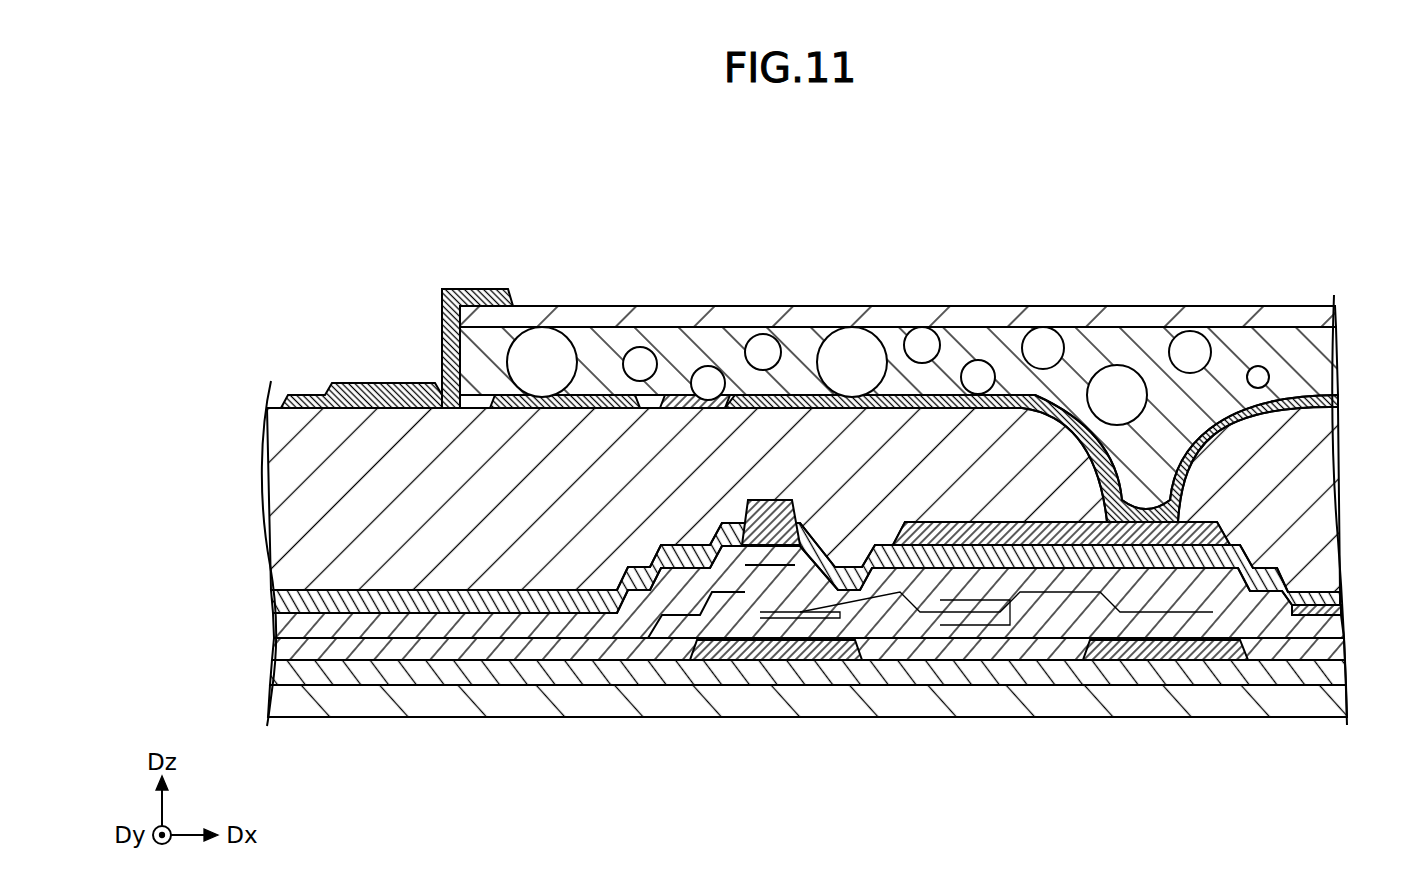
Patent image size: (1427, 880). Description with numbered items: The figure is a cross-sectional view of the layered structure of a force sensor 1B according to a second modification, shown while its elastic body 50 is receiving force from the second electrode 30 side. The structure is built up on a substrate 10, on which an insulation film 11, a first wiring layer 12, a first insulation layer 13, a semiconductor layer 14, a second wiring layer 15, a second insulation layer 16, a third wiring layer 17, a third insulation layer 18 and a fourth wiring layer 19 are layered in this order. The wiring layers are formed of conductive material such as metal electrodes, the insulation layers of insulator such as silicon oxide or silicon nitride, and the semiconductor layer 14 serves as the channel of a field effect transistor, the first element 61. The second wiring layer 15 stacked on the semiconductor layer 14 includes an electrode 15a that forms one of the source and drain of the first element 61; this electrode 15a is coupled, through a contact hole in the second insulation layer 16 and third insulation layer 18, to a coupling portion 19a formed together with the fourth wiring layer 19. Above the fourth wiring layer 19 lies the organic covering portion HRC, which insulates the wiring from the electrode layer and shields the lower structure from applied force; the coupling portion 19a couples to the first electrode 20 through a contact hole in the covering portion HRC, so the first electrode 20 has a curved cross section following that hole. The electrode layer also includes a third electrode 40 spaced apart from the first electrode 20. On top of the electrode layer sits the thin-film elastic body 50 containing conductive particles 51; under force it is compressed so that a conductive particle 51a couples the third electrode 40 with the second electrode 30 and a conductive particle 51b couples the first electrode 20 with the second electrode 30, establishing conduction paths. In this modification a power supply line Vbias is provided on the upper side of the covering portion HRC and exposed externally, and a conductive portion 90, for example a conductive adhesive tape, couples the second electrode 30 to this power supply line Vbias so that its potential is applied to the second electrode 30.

The force sensor 1B is at (1110, 157).
The substrate 10 is at (275, 703).
The insulation film 11 is at (275, 677).
The first wiring layer 12 is at (1213, 652).
The first insulation layer 13 is at (275, 650).
The semiconductor layer 14 is at (795, 615).
The second wiring layer 15 is at (1213, 605).
The electrode 15a is at (975, 615).
The second insulation layer 16 is at (275, 625).
The third wiring layer 17 is at (750, 565).
The third insulation layer 18 is at (275, 600).
The fourth wiring layer 19 is at (757, 497).
The coupling portion 19a is at (1220, 530).
The first electrode 20 is at (1330, 400).
The second electrode 30 is at (1240, 310).
The third electrode 40 is at (587, 395).
The elastic body 50 is at (1323, 350).
The conductive particles 51 is at (1040, 340).
The conductive particle 51a is at (541, 335).
The conductive particle 51b is at (852, 335).
The first element 61 is at (660, 534).
The conductive portion 90 is at (462, 287).
The covering portion HRC is at (1310, 462).
The power supply line Vbias is at (310, 393).